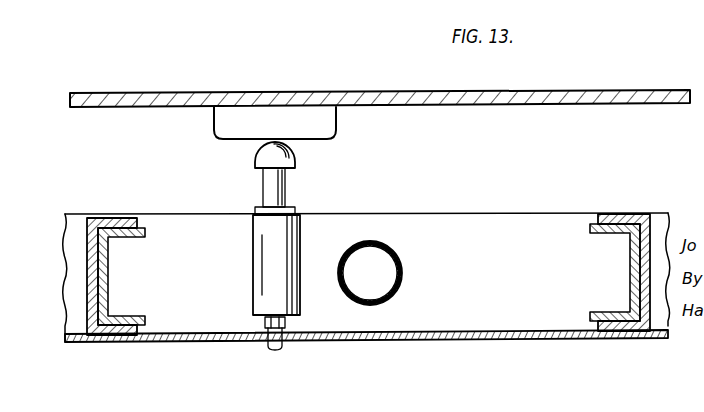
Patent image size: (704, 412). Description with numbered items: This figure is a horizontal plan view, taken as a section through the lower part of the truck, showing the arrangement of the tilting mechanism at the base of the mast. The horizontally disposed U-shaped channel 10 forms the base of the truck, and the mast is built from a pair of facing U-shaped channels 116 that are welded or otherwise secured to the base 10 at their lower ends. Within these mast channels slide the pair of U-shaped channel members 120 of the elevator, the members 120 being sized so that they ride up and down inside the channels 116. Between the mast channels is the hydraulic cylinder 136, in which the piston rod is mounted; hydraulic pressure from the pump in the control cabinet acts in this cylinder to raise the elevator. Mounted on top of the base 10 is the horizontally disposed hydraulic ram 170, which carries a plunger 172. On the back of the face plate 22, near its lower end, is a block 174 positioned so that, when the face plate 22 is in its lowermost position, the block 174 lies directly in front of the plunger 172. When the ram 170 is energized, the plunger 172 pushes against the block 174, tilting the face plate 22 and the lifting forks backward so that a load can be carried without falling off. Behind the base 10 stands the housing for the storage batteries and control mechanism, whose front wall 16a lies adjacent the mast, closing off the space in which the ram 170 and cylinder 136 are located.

The face plate 22 is at (312, 92).
The block 174 is at (330, 127).
The plunger 172 is at (253, 157).
The hydraulic ram 170 is at (252, 273).
The hydraulic cylinder 136 is at (383, 242).
The U-shaped channel 10 is at (509, 240).
The front wall 16a is at (212, 328).
The U-shaped channels 116 is at (103, 217).
The U-shaped channel members 120 is at (133, 239).